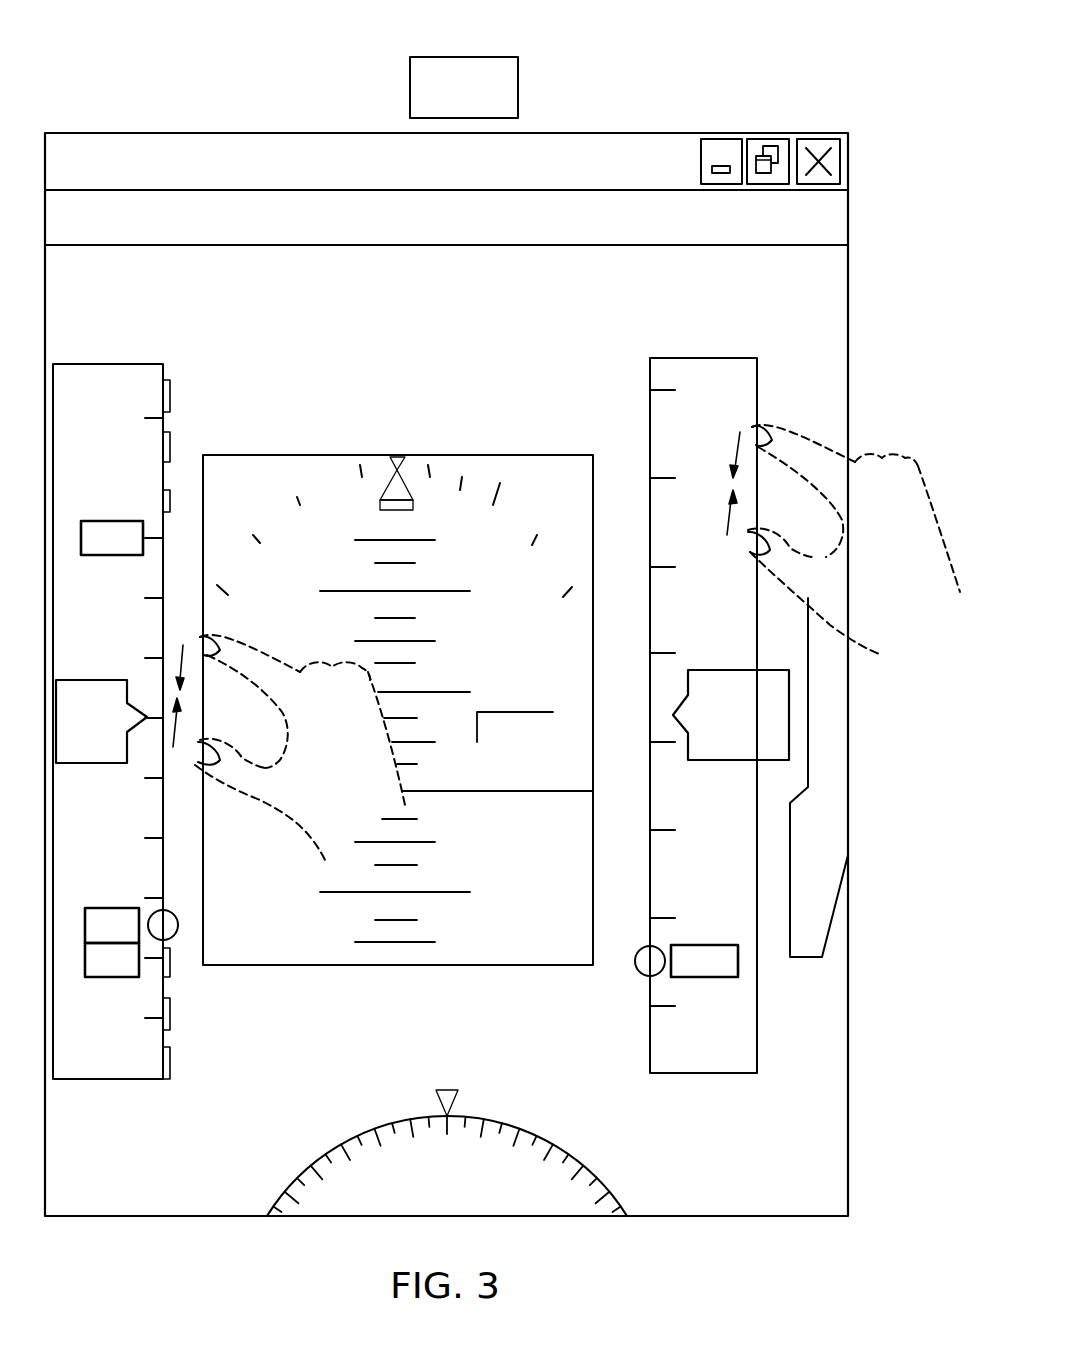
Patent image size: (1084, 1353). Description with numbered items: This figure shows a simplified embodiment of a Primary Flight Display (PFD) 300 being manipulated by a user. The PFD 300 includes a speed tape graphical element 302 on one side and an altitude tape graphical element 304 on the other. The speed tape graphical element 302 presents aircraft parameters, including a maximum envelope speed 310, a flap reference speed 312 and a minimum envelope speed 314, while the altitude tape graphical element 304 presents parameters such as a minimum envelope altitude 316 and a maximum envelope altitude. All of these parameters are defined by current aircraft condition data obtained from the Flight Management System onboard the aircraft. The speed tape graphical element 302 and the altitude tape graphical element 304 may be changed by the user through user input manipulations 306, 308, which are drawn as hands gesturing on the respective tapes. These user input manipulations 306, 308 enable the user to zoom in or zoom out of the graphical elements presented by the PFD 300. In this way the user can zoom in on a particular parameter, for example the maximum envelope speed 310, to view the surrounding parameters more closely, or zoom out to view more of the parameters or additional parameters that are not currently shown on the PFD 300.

The Primary Flight Display 300 is at (750, 88).
The speed tape graphical element 302 is at (158, 362).
The altitude tape graphical element 304 is at (757, 358).
The user input manipulation 306 is at (163, 748).
The user input manipulation 308 is at (720, 540).
The maximum envelope speed 310 is at (110, 520).
The flap reference speed 312 is at (90, 905).
The minimum envelope speed 314 is at (140, 964).
The minimum envelope altitude 316 is at (738, 965).